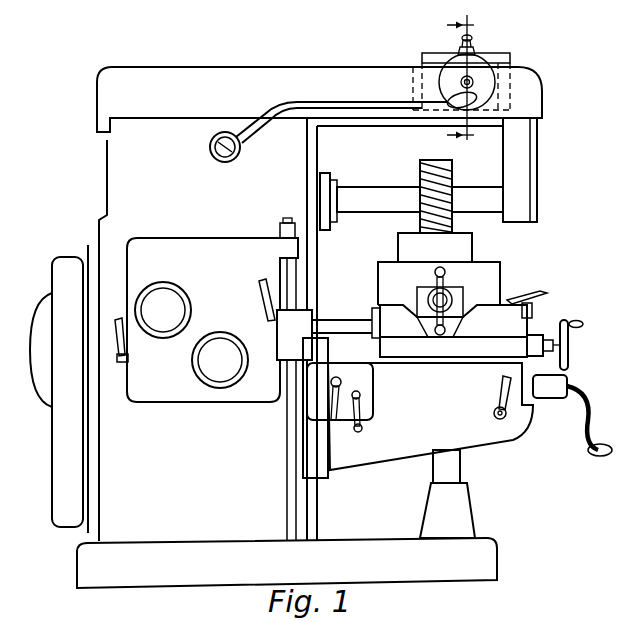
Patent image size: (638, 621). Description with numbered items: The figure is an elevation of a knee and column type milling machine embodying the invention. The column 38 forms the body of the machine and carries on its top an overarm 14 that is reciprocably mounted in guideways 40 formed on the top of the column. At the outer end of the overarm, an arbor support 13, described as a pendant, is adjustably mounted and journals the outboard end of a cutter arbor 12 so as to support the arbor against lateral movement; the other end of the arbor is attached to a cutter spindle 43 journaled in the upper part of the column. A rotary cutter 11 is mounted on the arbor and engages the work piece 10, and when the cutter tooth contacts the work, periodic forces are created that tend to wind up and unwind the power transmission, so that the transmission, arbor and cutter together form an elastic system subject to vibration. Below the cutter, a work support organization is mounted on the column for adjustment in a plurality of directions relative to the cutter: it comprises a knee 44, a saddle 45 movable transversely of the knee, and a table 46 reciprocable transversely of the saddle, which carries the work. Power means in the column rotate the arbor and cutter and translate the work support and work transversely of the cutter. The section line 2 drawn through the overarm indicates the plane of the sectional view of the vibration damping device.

The section line 2- 2 is at (452, 80).
The work piece 10 is at (466, 249).
The cutter 11 is at (442, 158).
The arbor 12 is at (472, 193).
The arbor support 13 is at (529, 160).
The overarm 14 is at (293, 75).
The column 38 is at (115, 187).
The guideways 40 is at (137, 125).
The cutter spindle 43 is at (330, 170).
The knee 44 is at (480, 438).
The saddle 45 is at (517, 327).
The table 46 is at (493, 273).